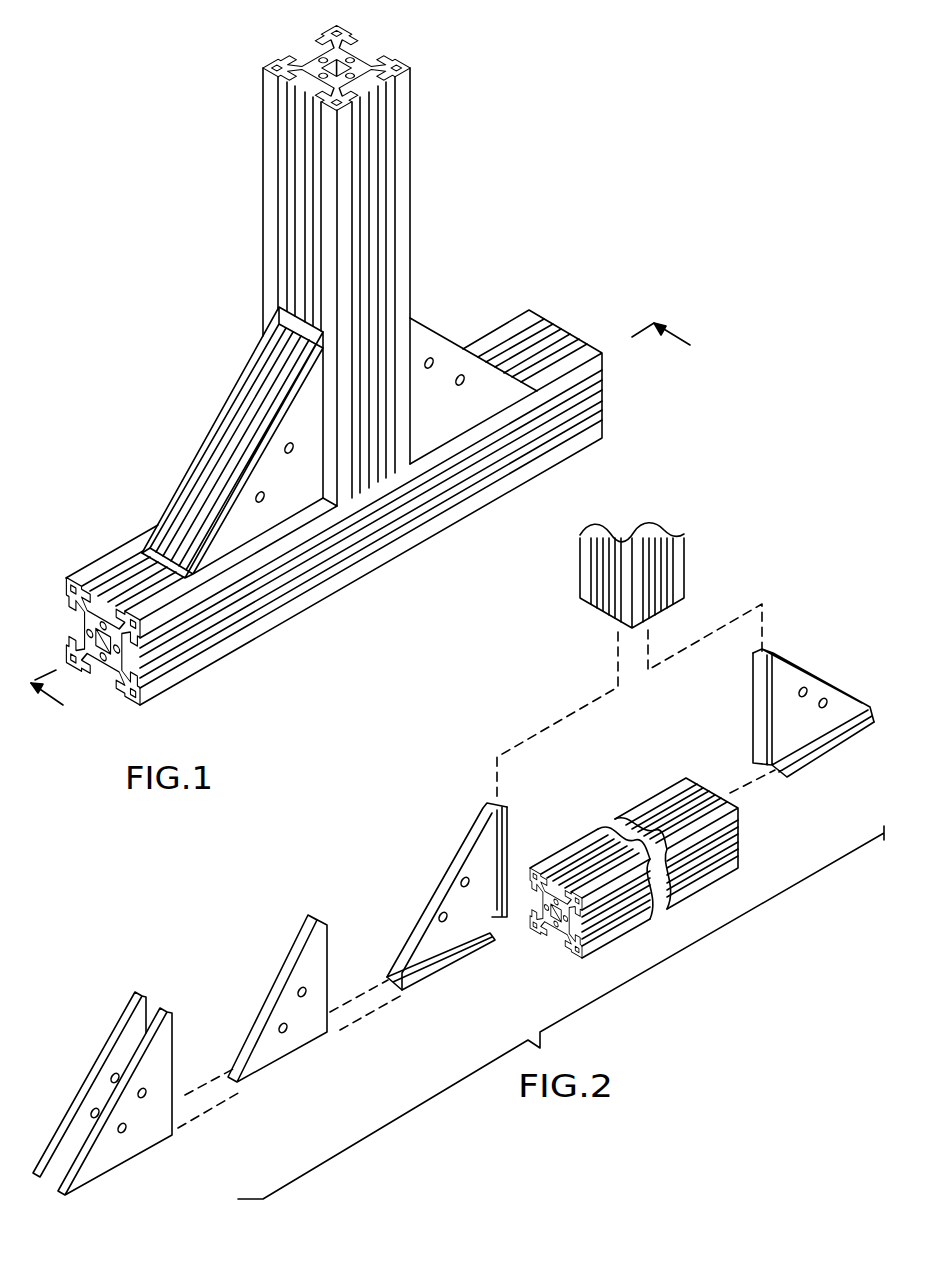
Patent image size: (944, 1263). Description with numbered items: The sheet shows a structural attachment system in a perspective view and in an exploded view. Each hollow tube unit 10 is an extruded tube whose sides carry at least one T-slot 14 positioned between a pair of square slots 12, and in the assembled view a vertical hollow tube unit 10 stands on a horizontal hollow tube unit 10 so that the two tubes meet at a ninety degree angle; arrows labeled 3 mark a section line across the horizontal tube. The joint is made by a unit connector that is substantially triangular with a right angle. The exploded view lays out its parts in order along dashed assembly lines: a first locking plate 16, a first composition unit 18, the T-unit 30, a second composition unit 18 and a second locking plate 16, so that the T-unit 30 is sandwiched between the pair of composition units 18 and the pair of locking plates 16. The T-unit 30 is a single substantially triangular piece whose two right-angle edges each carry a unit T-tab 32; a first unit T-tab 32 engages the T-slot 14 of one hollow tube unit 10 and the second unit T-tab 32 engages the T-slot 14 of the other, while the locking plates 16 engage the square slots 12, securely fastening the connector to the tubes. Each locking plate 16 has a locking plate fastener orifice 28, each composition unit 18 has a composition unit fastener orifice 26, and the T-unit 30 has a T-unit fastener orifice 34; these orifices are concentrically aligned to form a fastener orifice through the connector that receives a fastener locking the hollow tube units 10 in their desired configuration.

In FIG. 1, the hollow tube unit 10 is at (400, 76).
In FIG. 2, the hollow tube unit 10 is at (680, 540).
In FIG. 1, the square slot 12 is at (412, 100).
In FIG. 2, the square slot 12 is at (673, 568).
In FIG. 1, the T-slot 14 is at (374, 131).
In FIG. 2, the T-slot 14 is at (660, 607).
In FIG. 1, the locking plate 16 is at (427, 338).
In FIG. 2, the locking plate 16 is at (129, 1023).
In FIG. 1, the composition unit 18 is at (256, 397).
In FIG. 2, the composition unit 18 is at (291, 949).
In FIG. 2, the composition unit fastener orifice 26 is at (305, 990).
In FIG. 1, the locking plate fastener orifice 28 is at (265, 500).
In FIG. 2, the locking plate fastener orifice 28 is at (112, 1082).
In FIG. 1, the T-unit 30 is at (238, 457).
In FIG. 2, the T-unit 30 is at (424, 918).
In FIG. 2, the unit T-tab 32 is at (487, 803).
In FIG. 2, the T-unit fastener orifice 34 is at (466, 879).
In FIG. 1, the section line 3- 3 is at (352, 501).